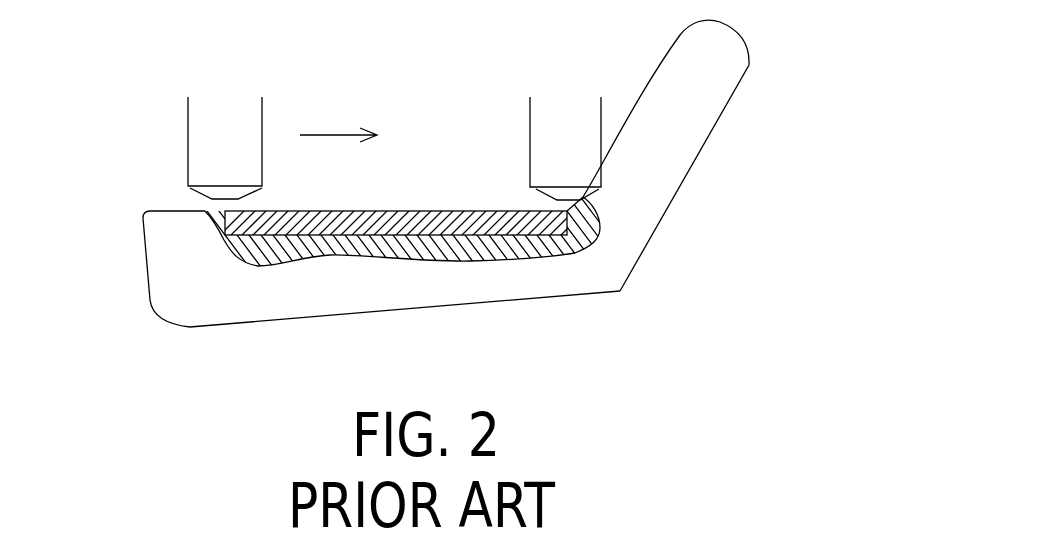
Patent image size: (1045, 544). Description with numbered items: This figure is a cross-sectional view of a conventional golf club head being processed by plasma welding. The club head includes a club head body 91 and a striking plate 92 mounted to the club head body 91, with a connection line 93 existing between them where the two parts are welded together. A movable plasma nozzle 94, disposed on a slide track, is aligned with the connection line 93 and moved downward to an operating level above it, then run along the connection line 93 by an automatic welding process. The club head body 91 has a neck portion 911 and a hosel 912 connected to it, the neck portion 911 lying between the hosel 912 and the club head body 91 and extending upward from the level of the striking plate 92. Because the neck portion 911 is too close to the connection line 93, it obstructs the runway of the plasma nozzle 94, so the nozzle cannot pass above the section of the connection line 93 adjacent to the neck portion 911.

The club head body 91 is at (484, 203).
The neck portion 911 is at (603, 198).
The hosel 912 is at (697, 127).
The striking plate 92 is at (416, 211).
The connection line 93 is at (222, 210).
The plasma nozzle 94 is at (202, 126).